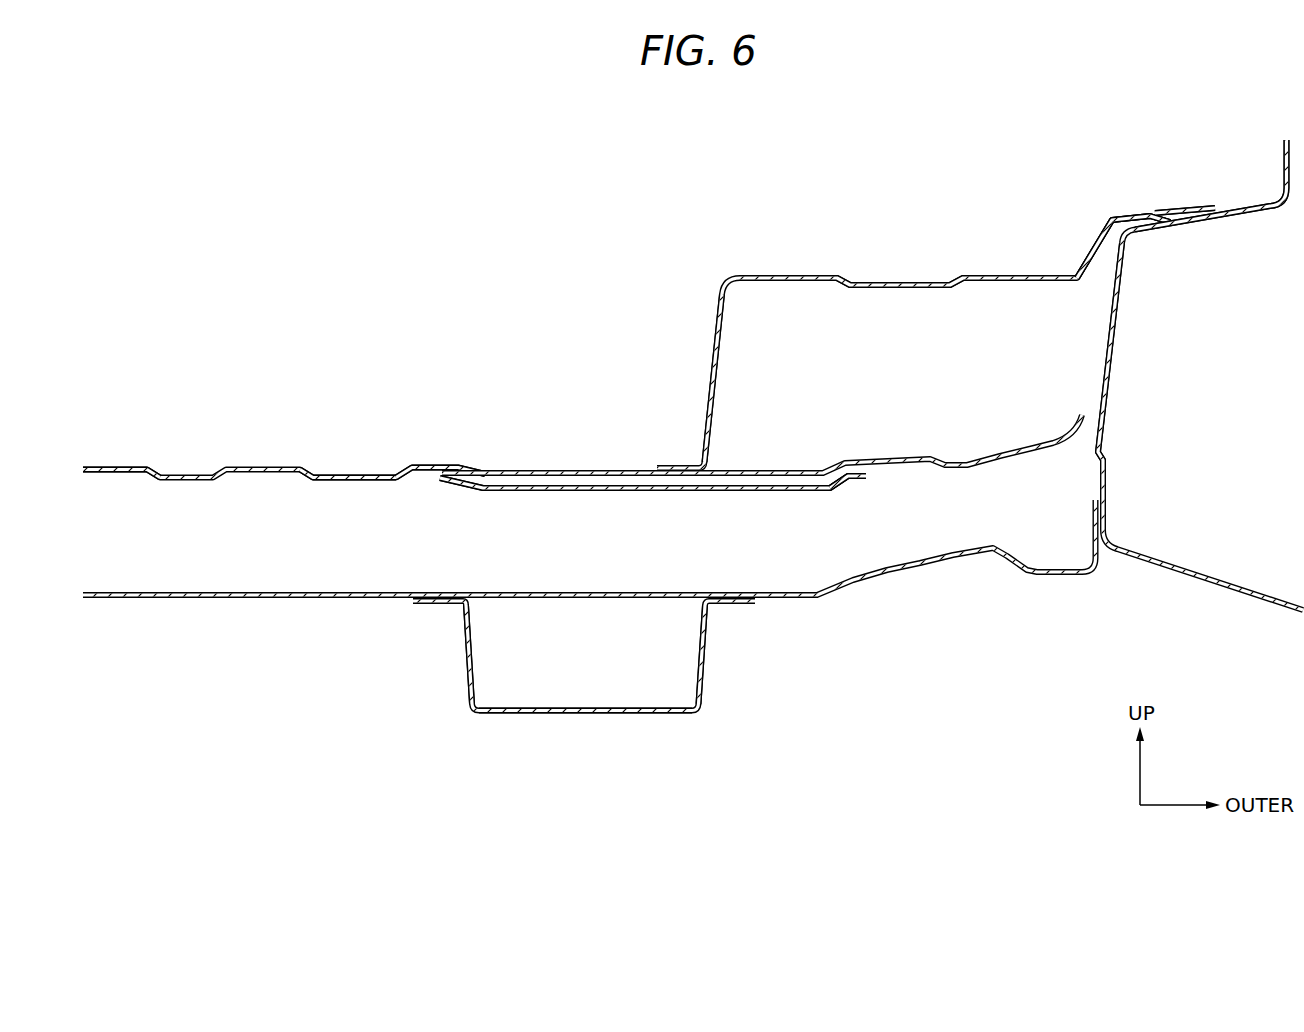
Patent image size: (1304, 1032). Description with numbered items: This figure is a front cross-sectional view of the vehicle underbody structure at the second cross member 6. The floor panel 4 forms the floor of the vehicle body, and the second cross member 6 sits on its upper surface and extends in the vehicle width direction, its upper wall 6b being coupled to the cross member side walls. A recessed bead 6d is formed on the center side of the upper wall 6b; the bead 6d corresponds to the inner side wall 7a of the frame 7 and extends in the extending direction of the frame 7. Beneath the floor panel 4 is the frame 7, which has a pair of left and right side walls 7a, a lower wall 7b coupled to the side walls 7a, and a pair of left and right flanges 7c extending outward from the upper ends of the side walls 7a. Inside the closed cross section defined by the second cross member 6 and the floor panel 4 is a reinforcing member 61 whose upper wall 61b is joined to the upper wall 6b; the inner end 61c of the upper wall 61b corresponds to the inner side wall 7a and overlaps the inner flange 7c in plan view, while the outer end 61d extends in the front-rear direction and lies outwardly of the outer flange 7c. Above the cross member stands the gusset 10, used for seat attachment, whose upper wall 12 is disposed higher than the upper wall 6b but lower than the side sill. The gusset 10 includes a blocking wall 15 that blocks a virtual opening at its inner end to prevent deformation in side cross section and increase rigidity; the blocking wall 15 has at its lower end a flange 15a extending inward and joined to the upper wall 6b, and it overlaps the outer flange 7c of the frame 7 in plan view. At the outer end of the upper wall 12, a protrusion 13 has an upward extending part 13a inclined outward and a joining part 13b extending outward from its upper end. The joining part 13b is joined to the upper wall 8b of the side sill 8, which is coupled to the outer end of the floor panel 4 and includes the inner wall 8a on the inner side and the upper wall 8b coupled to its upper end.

The floor panel 4 is at (186, 599).
The second cross member 6 is at (226, 467).
The upper wall 6b is at (118, 467).
The bead 6d is at (346, 472).
The reinforcing member 61 is at (492, 480).
The upper wall 61b is at (640, 485).
The inner end 61c is at (413, 467).
The outer end 61d is at (867, 478).
The frame 7 is at (682, 690).
The side walls 7a is at (462, 655).
The lower wall 7b is at (580, 715).
The flanges 7c is at (432, 602).
The side sill 8 is at (1190, 585).
The inner wall 8a is at (1113, 392).
The upper wall 8b is at (1262, 197).
The gusset 10 is at (718, 288).
The upper wall 12 is at (822, 276).
The protrusion 13 is at (1093, 122).
The upward extending part 13a is at (1097, 237).
The joining part 13b is at (1180, 211).
The blocking wall 15 is at (707, 360).
The flange 15a is at (667, 465).